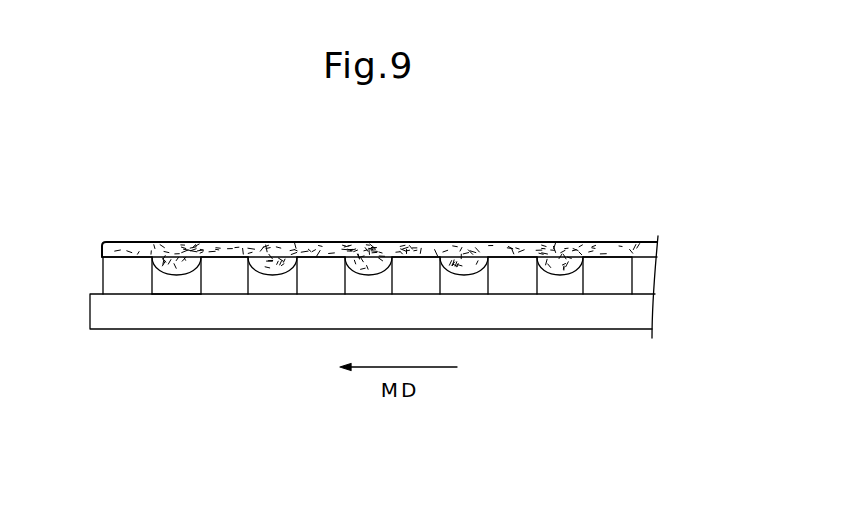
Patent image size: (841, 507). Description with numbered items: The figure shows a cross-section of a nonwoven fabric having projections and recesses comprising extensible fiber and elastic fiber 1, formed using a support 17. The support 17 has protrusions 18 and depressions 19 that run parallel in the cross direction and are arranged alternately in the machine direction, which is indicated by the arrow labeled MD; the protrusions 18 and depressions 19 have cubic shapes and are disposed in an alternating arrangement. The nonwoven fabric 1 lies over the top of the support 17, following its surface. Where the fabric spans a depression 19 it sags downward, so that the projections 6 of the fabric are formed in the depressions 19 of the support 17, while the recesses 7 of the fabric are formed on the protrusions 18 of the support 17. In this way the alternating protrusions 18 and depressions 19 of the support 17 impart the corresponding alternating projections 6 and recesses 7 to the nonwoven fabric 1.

The nonwoven fabric having projections and recesses 1 is at (120, 228).
The projection 6 is at (174, 250).
The recess 7 is at (223, 248).
The support 17 is at (584, 344).
The protrusion 18 is at (230, 288).
The depression 19 is at (175, 288).